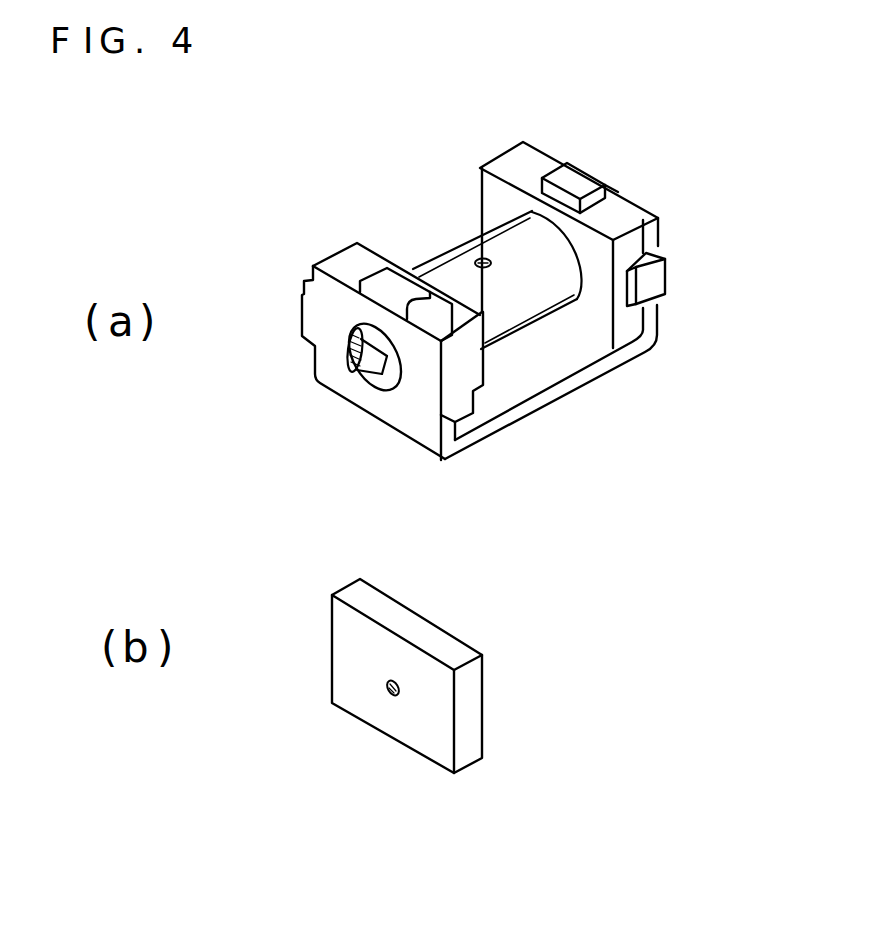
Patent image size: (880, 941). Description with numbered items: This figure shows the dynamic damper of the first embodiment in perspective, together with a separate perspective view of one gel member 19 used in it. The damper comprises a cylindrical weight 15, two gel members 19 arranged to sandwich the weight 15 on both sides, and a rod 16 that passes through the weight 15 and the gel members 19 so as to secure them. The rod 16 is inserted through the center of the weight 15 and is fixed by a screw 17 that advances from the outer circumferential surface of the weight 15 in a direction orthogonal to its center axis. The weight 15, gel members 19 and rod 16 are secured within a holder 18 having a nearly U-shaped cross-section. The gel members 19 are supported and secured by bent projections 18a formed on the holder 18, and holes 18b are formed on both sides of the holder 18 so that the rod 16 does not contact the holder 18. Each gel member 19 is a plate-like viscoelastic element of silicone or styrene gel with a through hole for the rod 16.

The weight 15 is at (522, 248).
The rod 16 is at (352, 370).
The screw 17 is at (480, 258).
The holder 18 is at (600, 370).
The bent projections 18a is at (393, 293).
The holes 18b is at (388, 372).
The gel member 19 is at (352, 258).